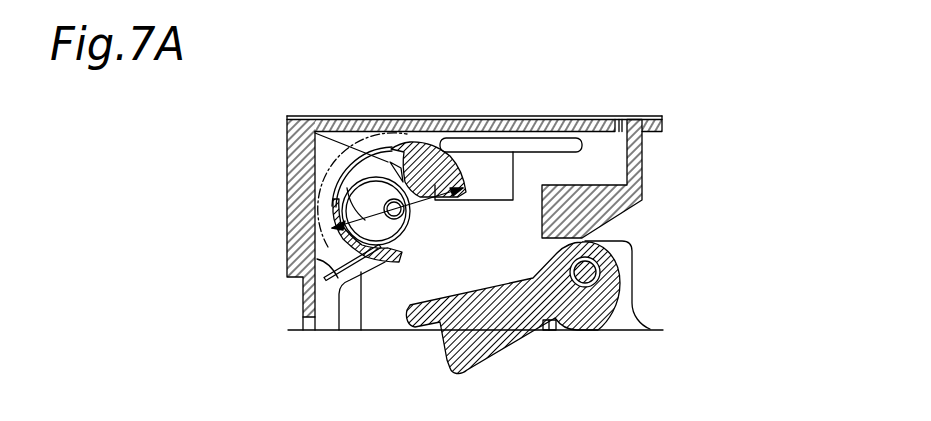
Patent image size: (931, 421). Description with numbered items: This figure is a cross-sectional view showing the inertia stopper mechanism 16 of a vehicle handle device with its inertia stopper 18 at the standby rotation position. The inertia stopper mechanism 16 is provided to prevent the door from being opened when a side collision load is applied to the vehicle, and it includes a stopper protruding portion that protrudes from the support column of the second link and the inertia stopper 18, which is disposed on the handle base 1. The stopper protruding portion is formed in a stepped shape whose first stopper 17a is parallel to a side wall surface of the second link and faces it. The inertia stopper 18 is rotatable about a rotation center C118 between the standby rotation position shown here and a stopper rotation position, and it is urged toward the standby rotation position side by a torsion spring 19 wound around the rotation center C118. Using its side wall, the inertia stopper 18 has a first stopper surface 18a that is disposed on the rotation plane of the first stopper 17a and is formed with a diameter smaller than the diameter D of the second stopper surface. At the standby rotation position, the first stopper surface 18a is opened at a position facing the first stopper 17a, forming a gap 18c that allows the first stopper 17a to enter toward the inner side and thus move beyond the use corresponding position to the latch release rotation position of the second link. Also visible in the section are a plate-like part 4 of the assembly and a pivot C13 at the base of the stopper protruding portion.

The handle base 1 is at (658, 163).
The cover plate 4 is at (488, 116).
The rotation center C118 is at (317, 131).
The inertia stopper 18 is at (437, 148).
The gap 18c is at (433, 212).
The diameter D is at (330, 191).
The torsion spring 19 is at (313, 258).
The first stopper surface 18a is at (362, 297).
The inertia stopper mechanism 16 is at (384, 335).
The first stopper 17a is at (500, 333).
The pivot shaft C13 is at (620, 250).